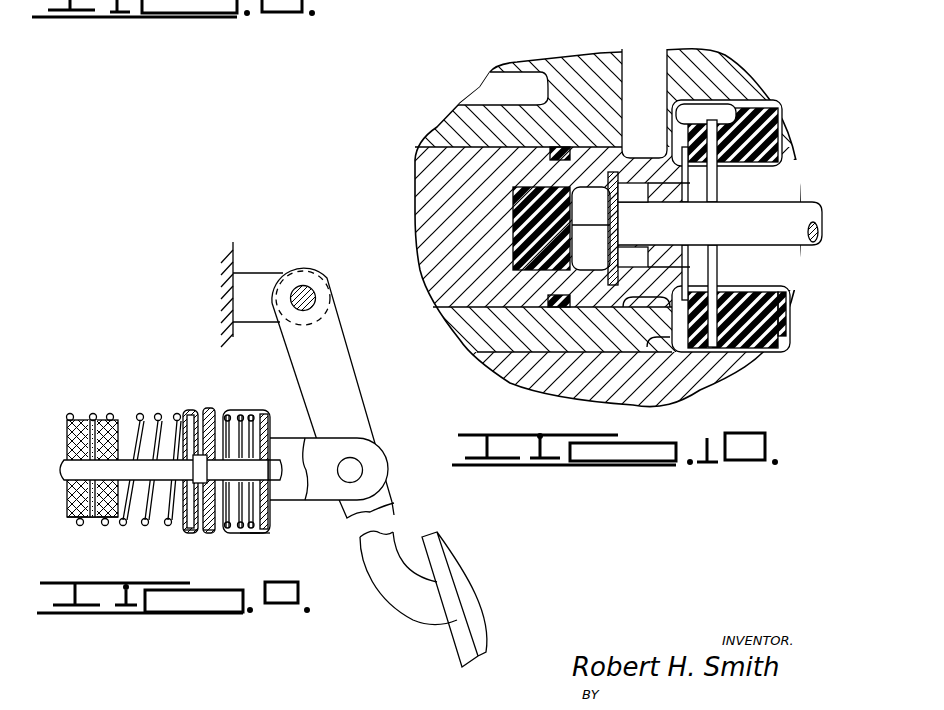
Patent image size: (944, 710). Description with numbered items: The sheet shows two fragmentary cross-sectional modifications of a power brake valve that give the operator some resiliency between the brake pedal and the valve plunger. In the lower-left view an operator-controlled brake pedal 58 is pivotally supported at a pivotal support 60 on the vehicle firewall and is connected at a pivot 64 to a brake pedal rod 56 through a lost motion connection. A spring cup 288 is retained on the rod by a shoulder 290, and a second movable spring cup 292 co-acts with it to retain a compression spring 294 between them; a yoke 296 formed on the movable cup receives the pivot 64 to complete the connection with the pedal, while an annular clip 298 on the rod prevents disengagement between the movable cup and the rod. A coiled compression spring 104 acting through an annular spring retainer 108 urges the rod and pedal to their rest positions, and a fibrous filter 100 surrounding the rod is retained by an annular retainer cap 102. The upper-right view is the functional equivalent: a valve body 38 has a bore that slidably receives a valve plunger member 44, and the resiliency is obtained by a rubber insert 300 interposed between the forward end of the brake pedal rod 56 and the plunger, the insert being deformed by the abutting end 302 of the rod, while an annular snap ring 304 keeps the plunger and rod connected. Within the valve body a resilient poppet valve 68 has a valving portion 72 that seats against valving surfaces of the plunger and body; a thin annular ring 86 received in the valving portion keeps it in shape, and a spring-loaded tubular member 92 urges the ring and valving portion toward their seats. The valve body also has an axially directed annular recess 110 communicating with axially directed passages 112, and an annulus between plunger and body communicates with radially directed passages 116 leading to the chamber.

In FIG. 9, the valve body 38 is at (95, 520).
In FIG. 10, the valve plunger member 44 is at (488, 360).
In FIG. 10, the brake pedal rod 56 is at (785, 250).
In FIG. 9, the brake pedal rod 56 is at (173, 420).
In FIG. 9, the brake pedal 58 is at (333, 358).
In FIG. 9, the pivotal support 60 is at (300, 288).
In FIG. 9, the pivot 64 is at (355, 465).
In FIG. 10, the poppet valve 68 is at (761, 322).
In FIG. 10, the valving portion 72 is at (690, 100).
In FIG. 10, the annular ring 86 is at (755, 345).
In FIG. 10, the tubular member 92 is at (783, 165).
In FIG. 9, the fibrous filter 100 is at (82, 420).
In FIG. 9, the annular retainer cap 102 is at (118, 420).
In FIG. 9, the coiled compression spring 104 is at (138, 417).
In FIG. 9, the annular spring retainer 108 is at (192, 540).
In FIG. 10, the annular recess 110 is at (508, 76).
In FIG. 10, the axially directed passage 112 is at (653, 372).
In FIG. 10, the radially directed passage 116 is at (632, 75).
In FIG. 9, the spring cup 288 is at (212, 522).
In FIG. 9, the shoulder 290 is at (253, 530).
In FIG. 9, the second movable spring cup 292 is at (253, 533).
In FIG. 9, the compression spring 294 is at (228, 413).
In FIG. 9, the yoke 296 is at (318, 503).
In FIG. 9, the annular clip 298 is at (275, 418).
In FIG. 10, the rubber insert 300 is at (513, 250).
In FIG. 10, the abutting end 302 is at (612, 222).
In FIG. 10, the annular snap ring 304 is at (690, 258).